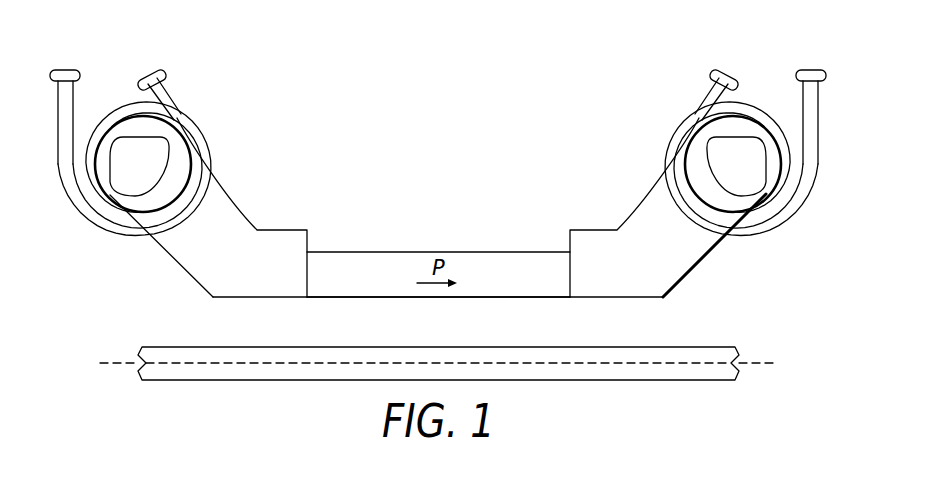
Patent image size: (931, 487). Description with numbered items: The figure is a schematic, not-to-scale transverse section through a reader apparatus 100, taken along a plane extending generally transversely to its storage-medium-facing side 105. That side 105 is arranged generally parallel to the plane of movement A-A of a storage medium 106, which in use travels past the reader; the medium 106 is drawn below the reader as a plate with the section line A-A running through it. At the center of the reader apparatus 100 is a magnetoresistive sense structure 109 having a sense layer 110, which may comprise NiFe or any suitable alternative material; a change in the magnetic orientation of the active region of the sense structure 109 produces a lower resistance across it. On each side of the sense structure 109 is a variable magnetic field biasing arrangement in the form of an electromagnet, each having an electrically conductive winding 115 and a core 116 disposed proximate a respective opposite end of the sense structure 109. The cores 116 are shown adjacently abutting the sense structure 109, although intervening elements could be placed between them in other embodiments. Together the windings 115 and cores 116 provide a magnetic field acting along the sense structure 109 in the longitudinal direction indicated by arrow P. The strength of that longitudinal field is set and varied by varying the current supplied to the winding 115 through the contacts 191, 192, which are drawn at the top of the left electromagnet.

The reader apparatus 100 is at (283, 102).
The storage-medium-facing side 105 is at (283, 297).
The storage medium 106 is at (533, 347).
The magnetoresistive sense structure 109 is at (375, 246).
The sense layer 110 is at (377, 283).
The electrically conductive winding 115 is at (72, 207).
The core 116 is at (238, 258).
The contact 191 is at (65, 70).
The contact 192 is at (152, 71).